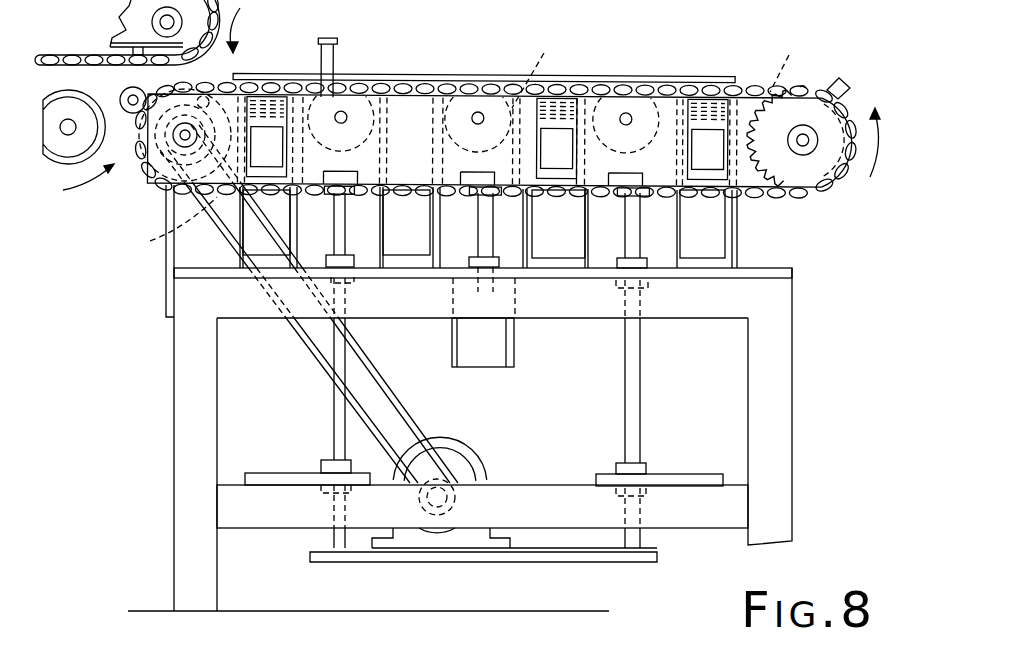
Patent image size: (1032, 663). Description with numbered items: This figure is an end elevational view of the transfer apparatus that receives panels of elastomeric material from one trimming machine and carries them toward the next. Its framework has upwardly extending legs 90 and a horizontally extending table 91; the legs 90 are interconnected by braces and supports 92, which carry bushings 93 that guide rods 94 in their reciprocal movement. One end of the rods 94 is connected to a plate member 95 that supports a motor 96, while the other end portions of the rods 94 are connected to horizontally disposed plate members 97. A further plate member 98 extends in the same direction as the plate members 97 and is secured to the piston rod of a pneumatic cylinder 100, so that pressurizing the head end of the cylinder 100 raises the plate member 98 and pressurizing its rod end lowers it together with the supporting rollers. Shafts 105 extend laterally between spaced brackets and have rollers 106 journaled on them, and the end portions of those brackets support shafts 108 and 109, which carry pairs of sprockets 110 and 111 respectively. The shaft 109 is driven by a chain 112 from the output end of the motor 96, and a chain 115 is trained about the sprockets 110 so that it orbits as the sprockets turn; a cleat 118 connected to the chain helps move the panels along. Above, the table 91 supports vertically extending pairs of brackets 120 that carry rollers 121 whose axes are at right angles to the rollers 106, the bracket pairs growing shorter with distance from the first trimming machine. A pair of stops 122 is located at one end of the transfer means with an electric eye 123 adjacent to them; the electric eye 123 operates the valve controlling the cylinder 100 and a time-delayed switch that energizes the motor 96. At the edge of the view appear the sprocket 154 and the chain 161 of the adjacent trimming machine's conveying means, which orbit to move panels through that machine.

The legs 90 is at (182, 566).
The table 91 is at (785, 275).
The supports 92 is at (287, 480).
The bushings 93 is at (650, 462).
The rods 94 is at (333, 422).
The plate member 95 is at (529, 553).
The motor 96 is at (477, 470).
The plate members 97 is at (667, 194).
The plate member 98 is at (544, 53).
The pneumatic cylinder 100 is at (474, 357).
The shafts 105 is at (342, 110).
The rollers 106 is at (472, 92).
The shaft 108 is at (804, 150).
The shaft 109 is at (173, 207).
The sprockets 110 is at (789, 55).
The sprockets 111 is at (173, 242).
The chain 112 is at (424, 430).
The chain 115 is at (803, 92).
The cleat 118 is at (841, 84).
The brackets 120 is at (433, 240).
The rollers 121 is at (265, 100).
The stops 122 is at (540, 9).
The electric eye 123 is at (338, 48).
The sprocket 154 is at (122, 18).
The chain 161 is at (108, 60).